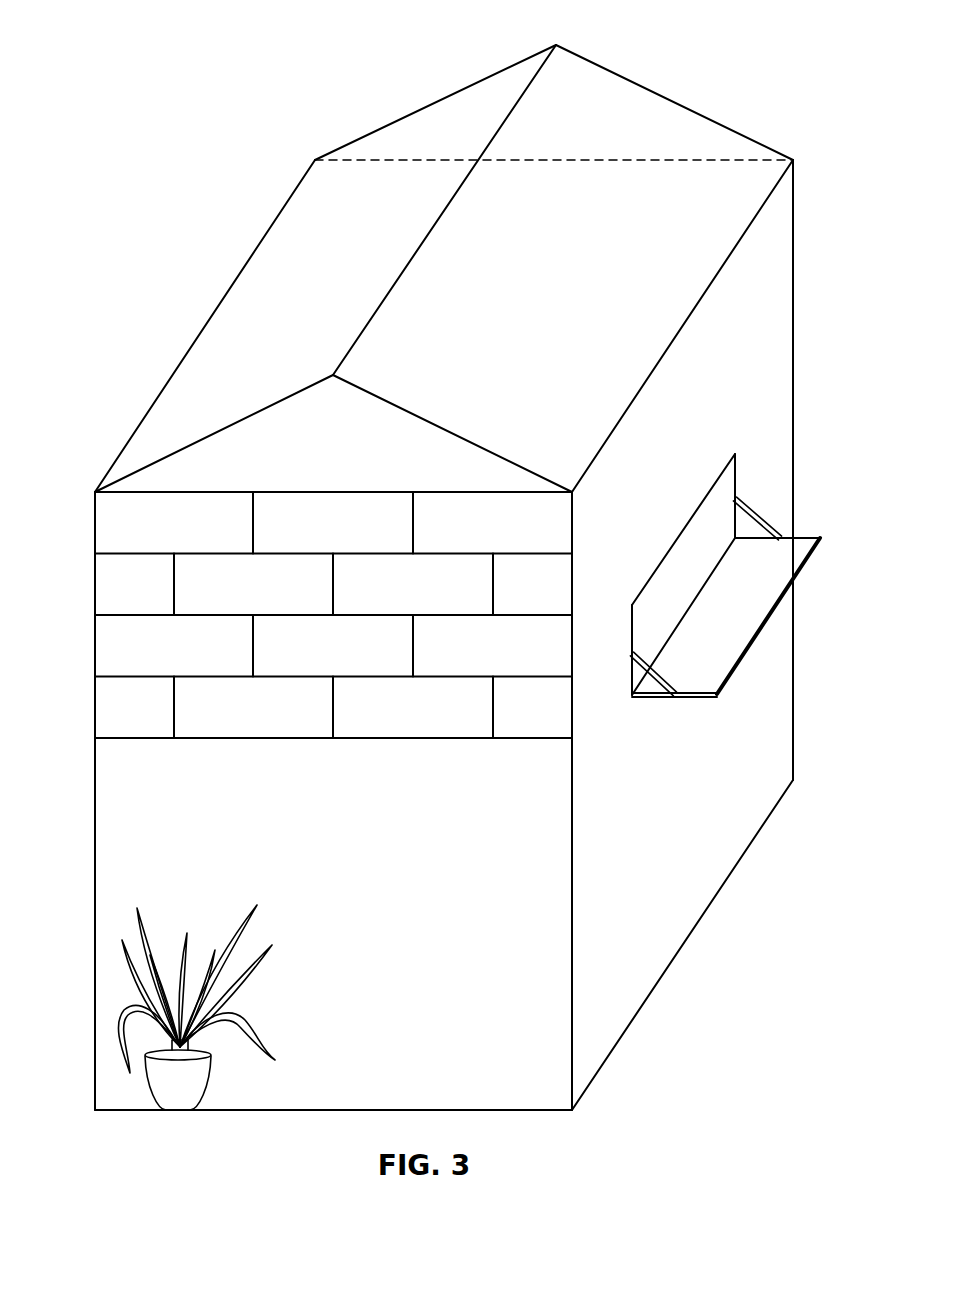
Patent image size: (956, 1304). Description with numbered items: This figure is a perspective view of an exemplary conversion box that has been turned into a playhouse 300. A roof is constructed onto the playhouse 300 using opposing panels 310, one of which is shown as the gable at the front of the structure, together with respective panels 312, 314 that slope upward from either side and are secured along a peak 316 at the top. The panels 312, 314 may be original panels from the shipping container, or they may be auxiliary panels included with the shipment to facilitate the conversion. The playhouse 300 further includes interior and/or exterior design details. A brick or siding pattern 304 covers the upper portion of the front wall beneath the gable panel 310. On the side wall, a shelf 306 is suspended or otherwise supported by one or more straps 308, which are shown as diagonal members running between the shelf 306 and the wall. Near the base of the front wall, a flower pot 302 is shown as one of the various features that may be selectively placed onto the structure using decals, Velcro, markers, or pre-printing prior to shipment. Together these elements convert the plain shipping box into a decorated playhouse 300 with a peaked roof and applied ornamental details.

The playhouse 300 is at (132, 117).
The flower pot 302 is at (212, 1077).
The brick or siding pattern 304 is at (92, 492).
The shelf 306 is at (732, 678).
The straps 308 is at (757, 515).
The opposing panels 310 is at (290, 445).
The panel 312 is at (317, 282).
The panel 314 is at (526, 282).
The peak 316 is at (543, 63).